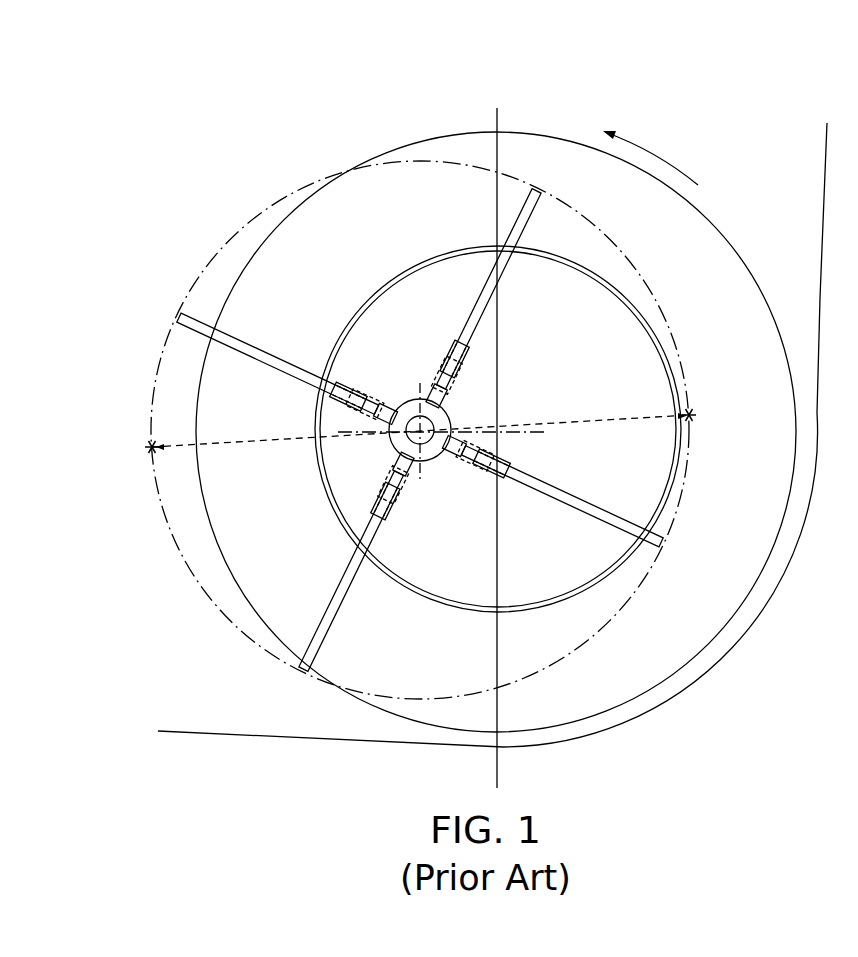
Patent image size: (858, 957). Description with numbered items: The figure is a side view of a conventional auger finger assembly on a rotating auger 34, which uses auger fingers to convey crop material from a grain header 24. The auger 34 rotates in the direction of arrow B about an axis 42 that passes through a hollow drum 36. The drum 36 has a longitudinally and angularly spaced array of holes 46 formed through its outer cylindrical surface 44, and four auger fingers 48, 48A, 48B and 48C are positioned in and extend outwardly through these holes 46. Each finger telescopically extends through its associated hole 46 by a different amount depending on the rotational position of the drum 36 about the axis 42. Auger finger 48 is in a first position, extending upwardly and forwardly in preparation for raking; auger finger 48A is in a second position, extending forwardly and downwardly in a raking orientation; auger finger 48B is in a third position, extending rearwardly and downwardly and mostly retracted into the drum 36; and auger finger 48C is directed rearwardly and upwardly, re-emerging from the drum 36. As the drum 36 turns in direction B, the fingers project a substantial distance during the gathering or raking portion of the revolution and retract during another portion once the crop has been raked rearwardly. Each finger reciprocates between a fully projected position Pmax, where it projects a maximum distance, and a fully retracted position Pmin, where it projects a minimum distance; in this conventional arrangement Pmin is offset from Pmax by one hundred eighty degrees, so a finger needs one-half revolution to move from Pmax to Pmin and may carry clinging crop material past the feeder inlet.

The grain header 24 is at (744, 110).
The rotating auger 34 is at (730, 240).
The drum 36 is at (657, 333).
The axis 42 is at (498, 430).
The outer cylindrical surface 44 is at (670, 500).
The holes 46 is at (511, 252).
The auger finger 48 is at (201, 310).
The auger finger 48A is at (306, 627).
The auger finger 48B is at (643, 553).
The auger finger 48C is at (533, 222).
The arrow B is at (667, 157).
The fully projected position Pmax is at (383, 443).
The fully retracted position Pmin is at (697, 422).